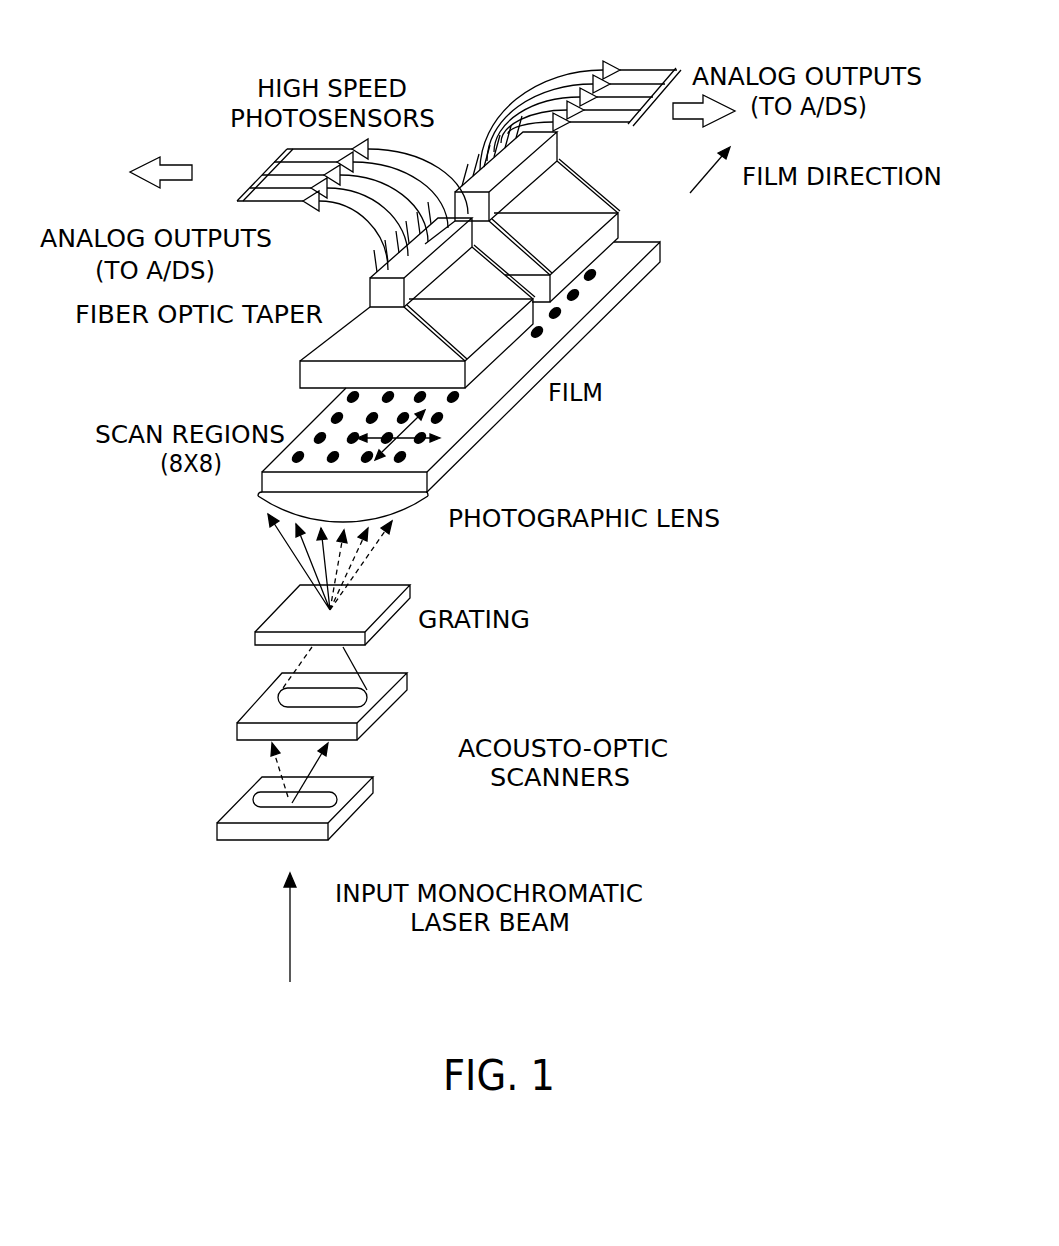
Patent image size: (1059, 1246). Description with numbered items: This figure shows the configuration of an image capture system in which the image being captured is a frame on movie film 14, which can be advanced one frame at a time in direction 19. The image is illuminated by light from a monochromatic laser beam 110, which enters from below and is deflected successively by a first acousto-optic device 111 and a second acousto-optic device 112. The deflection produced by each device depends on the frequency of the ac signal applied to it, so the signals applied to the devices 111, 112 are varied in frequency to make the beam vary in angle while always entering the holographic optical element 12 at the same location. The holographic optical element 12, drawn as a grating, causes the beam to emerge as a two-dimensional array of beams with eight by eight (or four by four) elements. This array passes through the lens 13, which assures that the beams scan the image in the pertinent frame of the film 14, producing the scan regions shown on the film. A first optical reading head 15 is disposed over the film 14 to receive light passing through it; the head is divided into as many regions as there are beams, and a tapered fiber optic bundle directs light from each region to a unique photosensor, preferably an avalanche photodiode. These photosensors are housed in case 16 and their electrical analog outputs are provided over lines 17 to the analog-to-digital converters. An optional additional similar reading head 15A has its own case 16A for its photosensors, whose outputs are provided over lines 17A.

The monochromatic laser beam 110 is at (290, 940).
The first acousto-optic device 111 is at (373, 785).
The second acousto-optic device 112 is at (407, 677).
The holographic optical element 12 is at (410, 583).
The lens 13 is at (413, 521).
The movie film 14 is at (500, 420).
The first optical reading head 15 is at (500, 341).
The additional reading head 15A is at (606, 222).
The case 16 is at (368, 290).
The case 16A is at (558, 140).
The lines 17 is at (353, 223).
The lines 17A is at (533, 78).
The film direction 19 is at (704, 177).